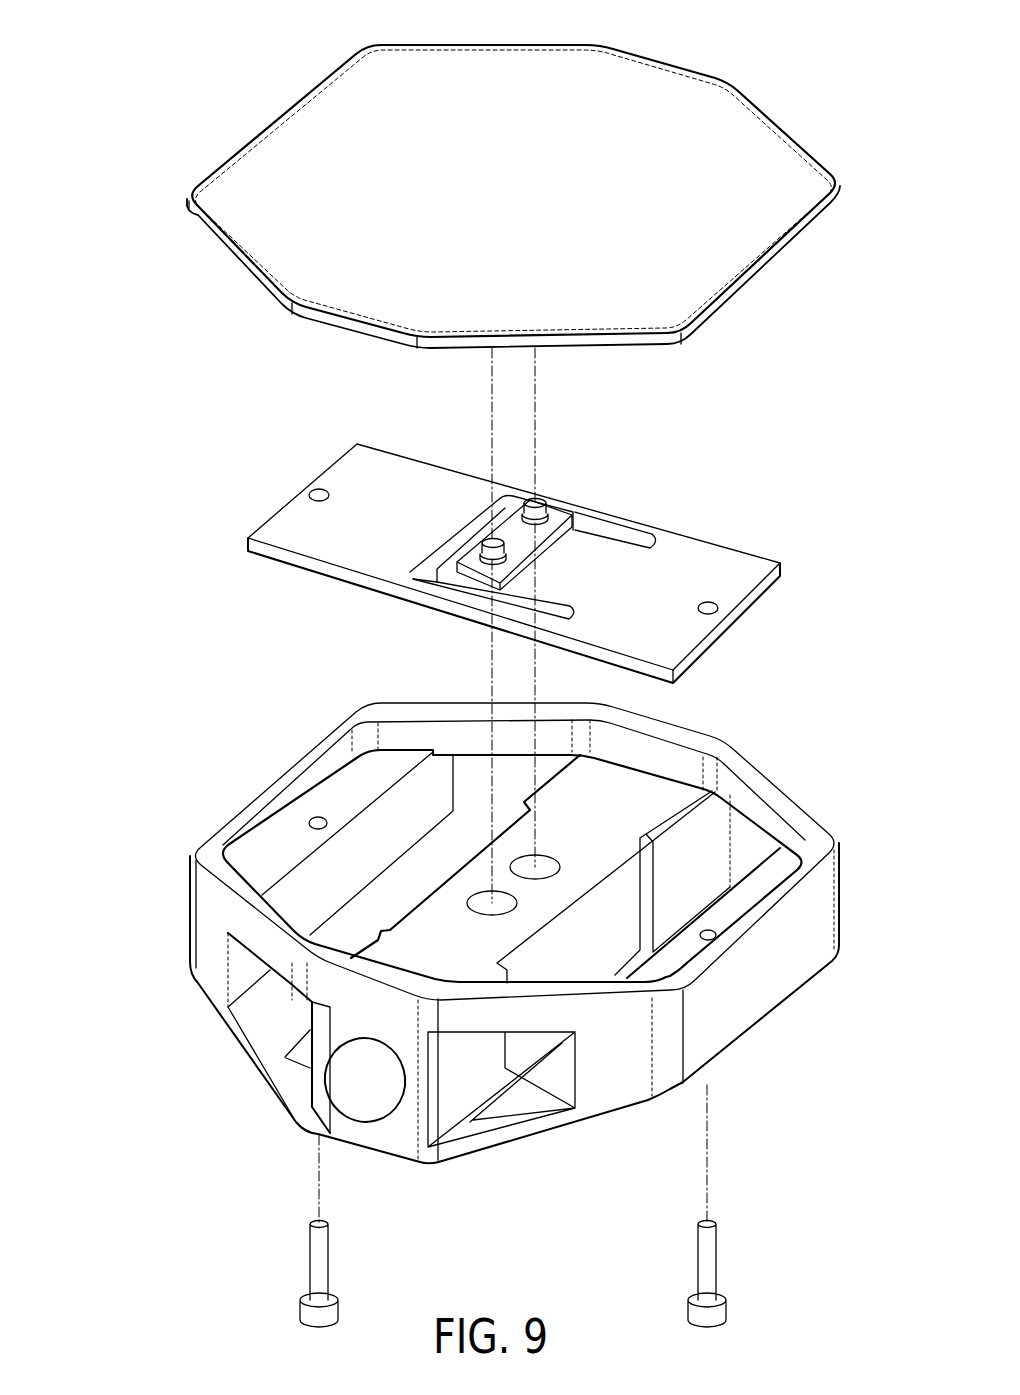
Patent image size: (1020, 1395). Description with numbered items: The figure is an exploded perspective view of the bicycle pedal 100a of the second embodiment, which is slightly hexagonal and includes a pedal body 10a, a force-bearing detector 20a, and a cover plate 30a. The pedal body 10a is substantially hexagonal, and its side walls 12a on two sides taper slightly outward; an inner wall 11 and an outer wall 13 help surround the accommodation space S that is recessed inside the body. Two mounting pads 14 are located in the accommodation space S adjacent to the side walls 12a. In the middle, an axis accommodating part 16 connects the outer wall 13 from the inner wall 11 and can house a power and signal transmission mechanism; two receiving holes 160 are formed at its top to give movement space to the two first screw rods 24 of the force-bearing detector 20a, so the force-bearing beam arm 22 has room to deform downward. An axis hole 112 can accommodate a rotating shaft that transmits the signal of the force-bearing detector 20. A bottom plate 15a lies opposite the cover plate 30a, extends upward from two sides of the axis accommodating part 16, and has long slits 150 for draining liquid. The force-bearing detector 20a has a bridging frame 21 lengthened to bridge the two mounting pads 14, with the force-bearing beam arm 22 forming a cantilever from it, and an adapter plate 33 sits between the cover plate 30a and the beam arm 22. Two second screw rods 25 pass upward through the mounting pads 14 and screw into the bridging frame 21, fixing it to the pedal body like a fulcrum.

The bicycle pedal 100a is at (103, 72).
The cover plate 30a is at (758, 148).
The force-bearing detector 20a is at (514, 556).
The force-bearing detector 20 is at (622, 528).
The bridging frame 21 is at (682, 560).
The force-bearing beam arm 22 is at (565, 565).
The first screw rods 24 is at (488, 540).
The adapter plate 33 is at (557, 512).
The pedal body 10a is at (535, 937).
The inner wall 11 is at (325, 990).
The side walls 12a is at (232, 812).
The outer wall 13 is at (668, 733).
The mounting pads 14 is at (342, 793).
The bottom plate 15a is at (520, 1117).
The axis accommodating part 16 is at (712, 837).
The receiving holes 160 is at (550, 867).
The axis hole 112 is at (360, 1097).
The long slits 150 is at (510, 1100).
The second screw rods 25 is at (320, 1263).
The accommodation space S is at (779, 815).